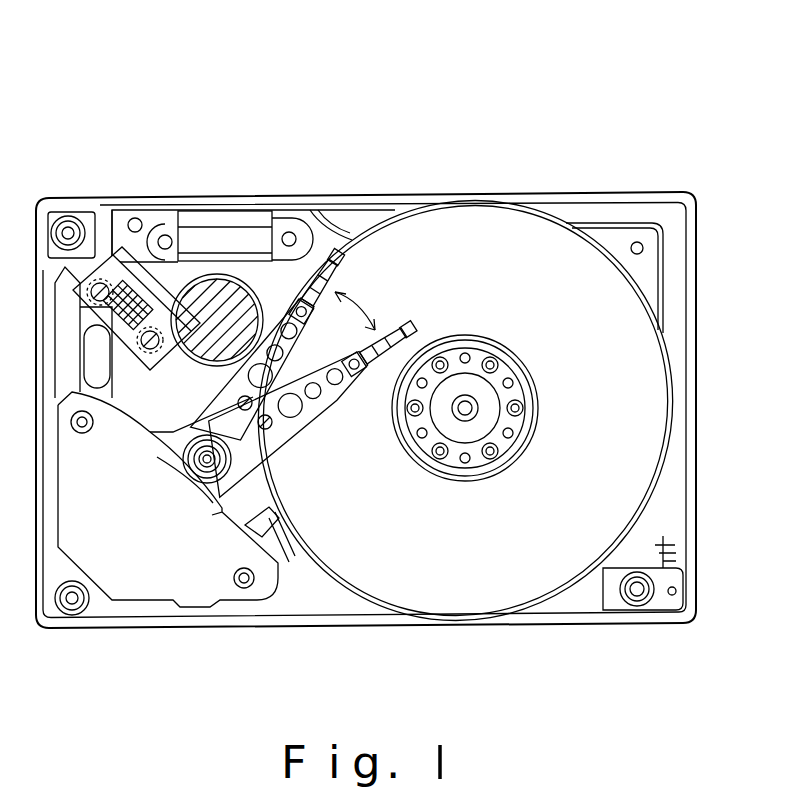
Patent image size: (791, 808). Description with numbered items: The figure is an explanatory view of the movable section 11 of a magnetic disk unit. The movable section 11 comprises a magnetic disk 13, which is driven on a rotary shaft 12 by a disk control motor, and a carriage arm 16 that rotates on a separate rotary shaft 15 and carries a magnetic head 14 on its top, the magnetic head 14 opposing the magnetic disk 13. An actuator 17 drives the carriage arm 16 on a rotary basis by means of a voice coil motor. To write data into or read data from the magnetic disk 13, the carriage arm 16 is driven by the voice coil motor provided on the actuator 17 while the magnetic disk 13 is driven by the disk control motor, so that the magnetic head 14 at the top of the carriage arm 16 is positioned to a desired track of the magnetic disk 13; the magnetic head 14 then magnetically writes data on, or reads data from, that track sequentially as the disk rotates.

The movable section 11 is at (472, 118).
The rotary shaft 12 is at (478, 418).
The magnetic disk 13 is at (622, 378).
The magnetic head 14 is at (410, 325).
The rotary shaft 15 is at (208, 472).
The carriage arm 16 is at (285, 436).
The actuator 17 is at (130, 583).